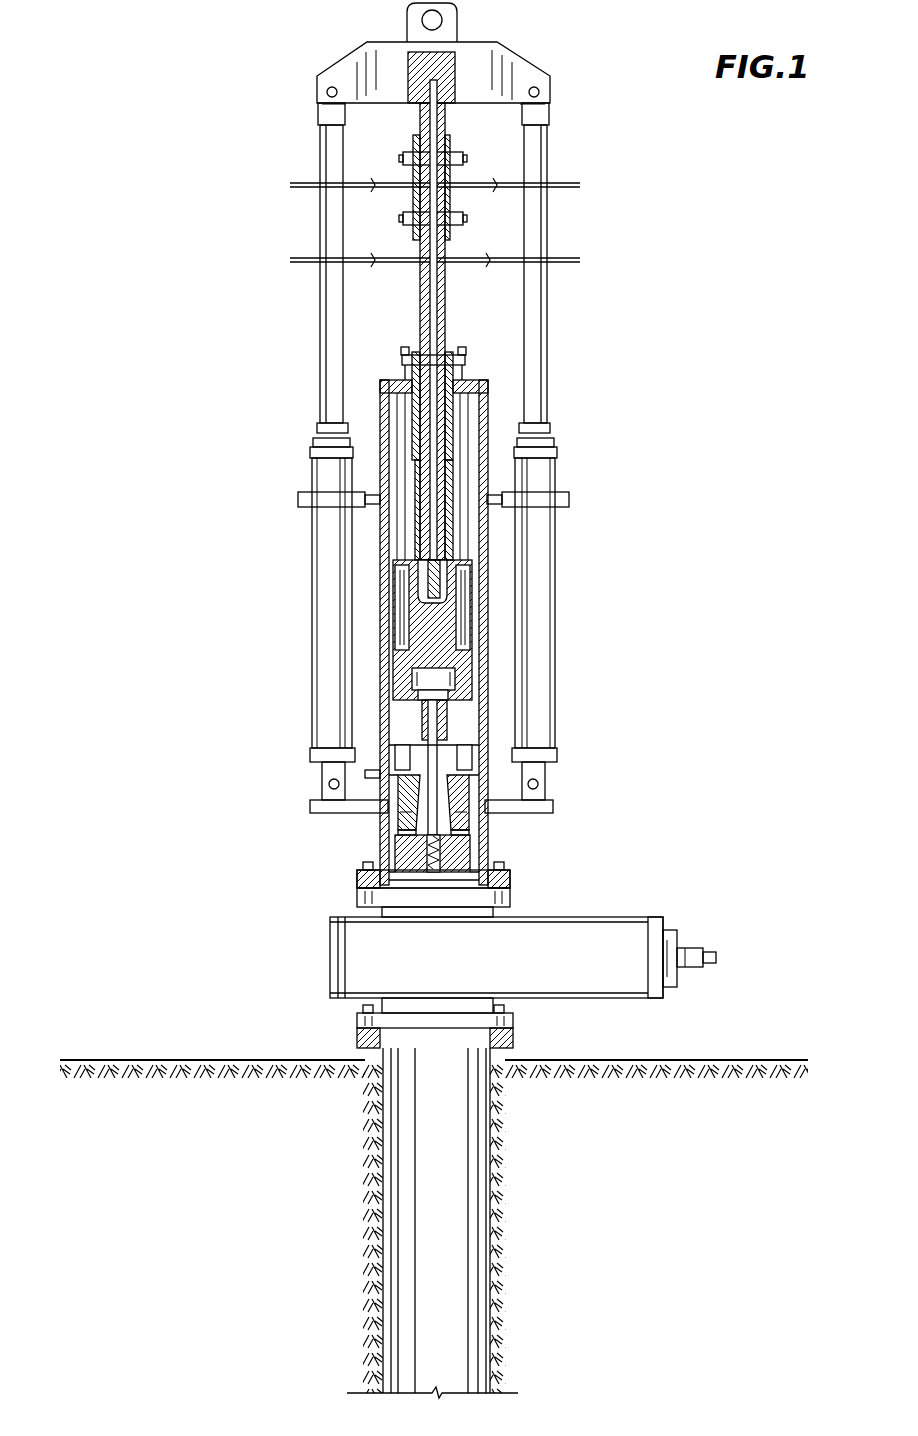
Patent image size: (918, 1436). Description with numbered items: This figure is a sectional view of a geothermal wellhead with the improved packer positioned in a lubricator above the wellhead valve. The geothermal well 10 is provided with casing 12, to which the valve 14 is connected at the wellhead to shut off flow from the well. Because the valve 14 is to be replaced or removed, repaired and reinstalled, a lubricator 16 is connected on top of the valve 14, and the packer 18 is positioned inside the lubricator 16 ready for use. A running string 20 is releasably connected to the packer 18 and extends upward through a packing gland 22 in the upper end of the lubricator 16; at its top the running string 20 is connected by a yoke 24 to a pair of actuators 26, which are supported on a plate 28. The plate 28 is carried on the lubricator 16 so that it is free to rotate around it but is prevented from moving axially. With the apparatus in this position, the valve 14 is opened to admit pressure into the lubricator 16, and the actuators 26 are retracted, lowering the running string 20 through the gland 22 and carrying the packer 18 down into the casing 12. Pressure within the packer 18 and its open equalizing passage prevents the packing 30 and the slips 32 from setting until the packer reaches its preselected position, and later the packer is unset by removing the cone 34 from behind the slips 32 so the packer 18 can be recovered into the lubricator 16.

The geothermal well 10 is at (208, 1054).
The casing 12 is at (480, 1232).
The valve 14 is at (633, 917).
The lubricator 16 is at (488, 675).
The packer 18 is at (492, 834).
The running string 20 is at (447, 317).
The packing gland 22 is at (465, 374).
The yoke 24 is at (513, 56).
The actuators 26 is at (313, 573).
The plate 28 is at (553, 805).
The packing 30 is at (478, 855).
The slips 32 is at (480, 778).
The cone 34 is at (385, 828).